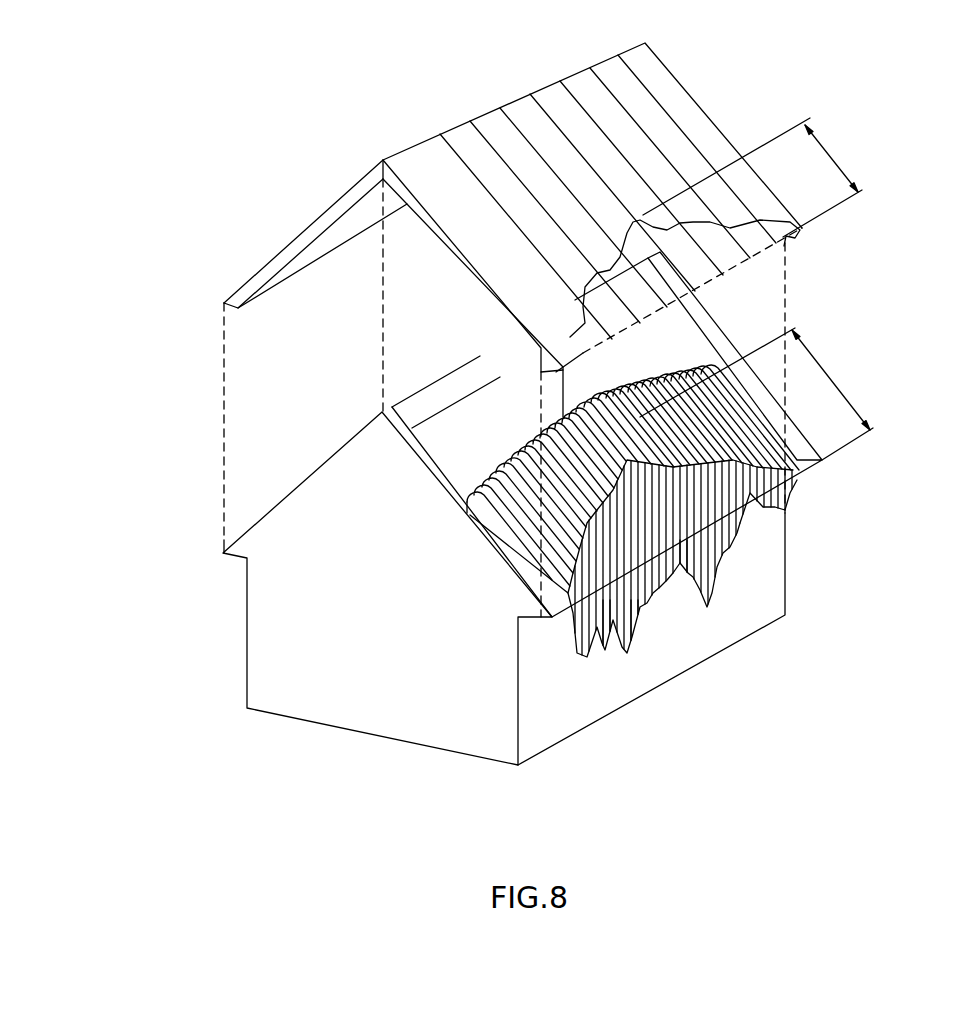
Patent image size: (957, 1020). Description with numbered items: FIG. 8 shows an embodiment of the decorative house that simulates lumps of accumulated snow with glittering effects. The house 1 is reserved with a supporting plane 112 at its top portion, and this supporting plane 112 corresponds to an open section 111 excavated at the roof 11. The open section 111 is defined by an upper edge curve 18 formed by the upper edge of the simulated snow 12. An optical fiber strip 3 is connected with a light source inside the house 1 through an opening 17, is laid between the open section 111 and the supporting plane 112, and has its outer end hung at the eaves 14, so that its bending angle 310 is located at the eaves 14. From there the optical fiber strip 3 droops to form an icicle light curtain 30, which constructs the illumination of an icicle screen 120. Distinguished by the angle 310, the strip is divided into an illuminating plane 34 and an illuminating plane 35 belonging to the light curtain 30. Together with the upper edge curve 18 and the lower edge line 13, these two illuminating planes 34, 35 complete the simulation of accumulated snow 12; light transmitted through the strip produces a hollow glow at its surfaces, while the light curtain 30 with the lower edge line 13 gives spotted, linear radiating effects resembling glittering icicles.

The house 1 is at (262, 610).
The optical fiber strip 3 is at (660, 388).
The roof 11 is at (310, 237).
The simulated snow 12 is at (638, 607).
The lower edge line 13 is at (613, 630).
The eaves 14 is at (797, 460).
The opening 17 is at (612, 330).
The upper edge curve 18 is at (582, 326).
The icicle light curtain 30 is at (707, 573).
The illuminating plane 34 is at (788, 502).
The illuminating plane of the light curtain 35 is at (725, 533).
The open section 111 is at (785, 177).
The supporting plane 112 is at (781, 394).
The icicle screen 120 is at (683, 567).
The angle 310 is at (567, 605).